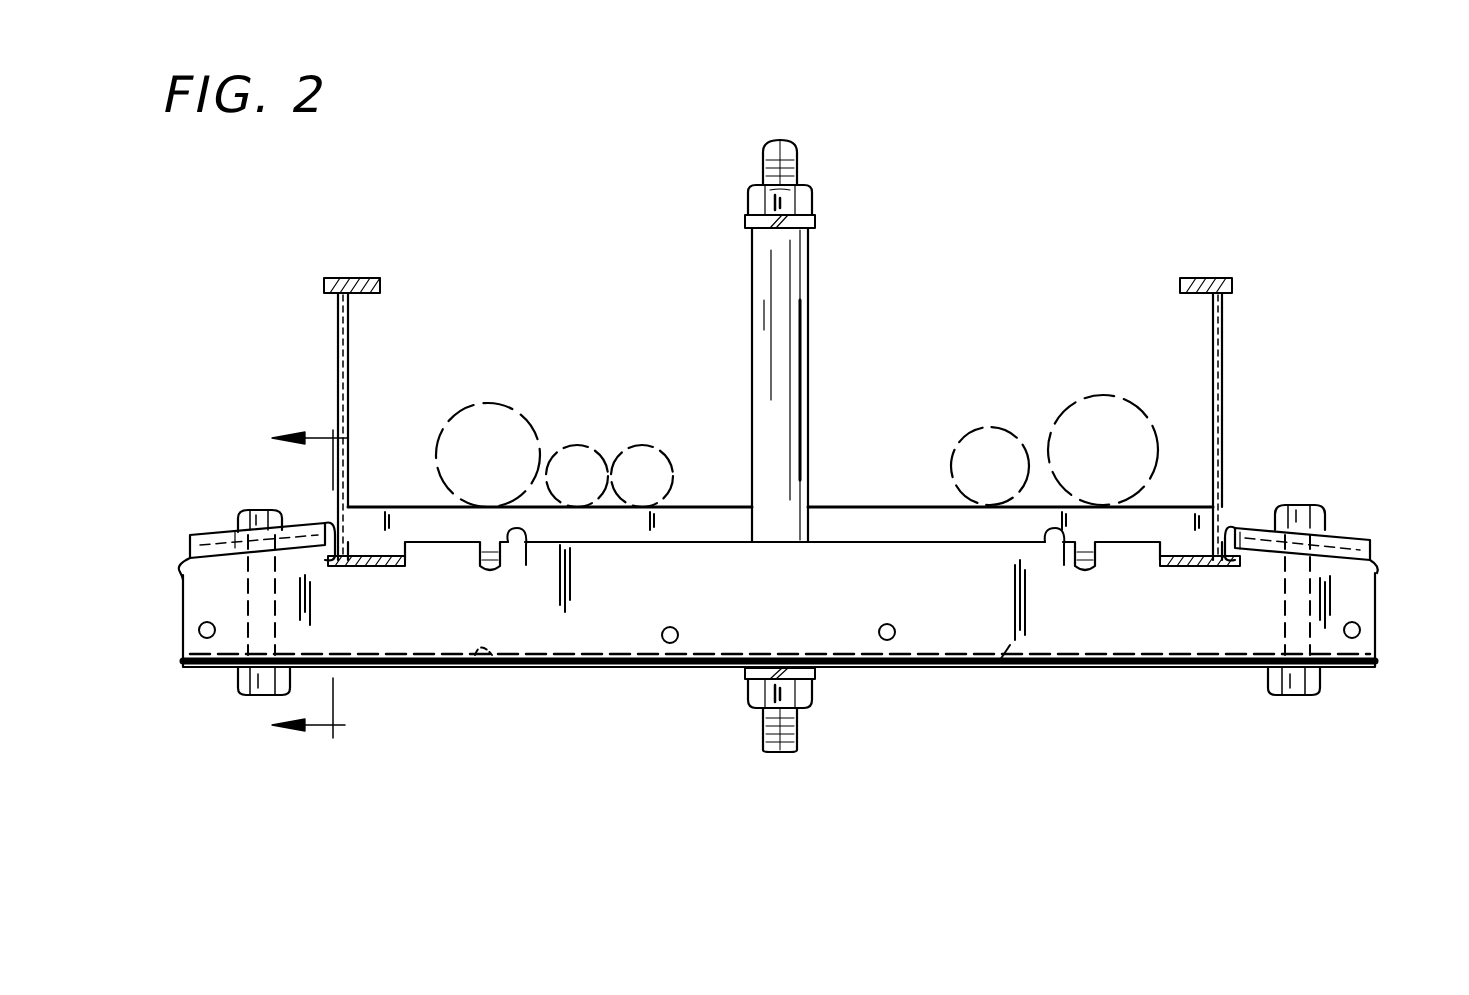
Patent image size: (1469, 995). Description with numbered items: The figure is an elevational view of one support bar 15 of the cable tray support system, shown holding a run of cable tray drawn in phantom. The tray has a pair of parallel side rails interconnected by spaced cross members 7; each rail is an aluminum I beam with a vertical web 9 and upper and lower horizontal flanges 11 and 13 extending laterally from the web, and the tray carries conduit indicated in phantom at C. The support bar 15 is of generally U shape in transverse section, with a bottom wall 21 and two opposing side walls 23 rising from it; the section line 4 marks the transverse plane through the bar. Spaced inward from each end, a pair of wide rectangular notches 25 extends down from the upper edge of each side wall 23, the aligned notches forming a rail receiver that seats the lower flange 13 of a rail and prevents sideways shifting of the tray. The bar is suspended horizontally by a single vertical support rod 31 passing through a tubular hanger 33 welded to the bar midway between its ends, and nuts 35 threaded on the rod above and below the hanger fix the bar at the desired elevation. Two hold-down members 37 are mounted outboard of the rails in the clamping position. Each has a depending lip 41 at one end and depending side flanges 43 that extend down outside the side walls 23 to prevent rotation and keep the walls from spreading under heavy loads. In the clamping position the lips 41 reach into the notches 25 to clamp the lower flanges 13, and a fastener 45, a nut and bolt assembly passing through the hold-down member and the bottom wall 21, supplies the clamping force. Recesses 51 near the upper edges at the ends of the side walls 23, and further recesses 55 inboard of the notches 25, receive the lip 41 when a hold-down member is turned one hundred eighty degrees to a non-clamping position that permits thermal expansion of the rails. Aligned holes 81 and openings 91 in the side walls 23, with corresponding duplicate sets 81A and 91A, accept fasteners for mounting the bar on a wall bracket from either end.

The section line 4- 4 is at (310, 580).
The cross member 7 is at (870, 505).
The vertical web 9 is at (350, 378).
The upper horizontal flange 11 is at (355, 278).
The lower horizontal flange 13 is at (365, 568).
The support bar 15 is at (1003, 665).
The bottom wall 21 is at (490, 662).
The side wall 23 is at (1140, 636).
The notch 25 is at (455, 580).
The vertical support rod 31 is at (800, 150).
The tubular hanger 33 is at (808, 318).
The nut 35 is at (813, 203).
The hold-down member 37 is at (160, 485).
The depending lip 41 is at (300, 485).
The depending side flange 43 is at (160, 548).
The fastener 45 is at (230, 470).
The recess 51 is at (158, 598).
The recess 55 is at (516, 560).
The hole 81 is at (168, 655).
The opening 81A is at (1360, 630).
The opening 91 is at (893, 638).
The opening 91A is at (670, 643).
The conduit C is at (525, 412).